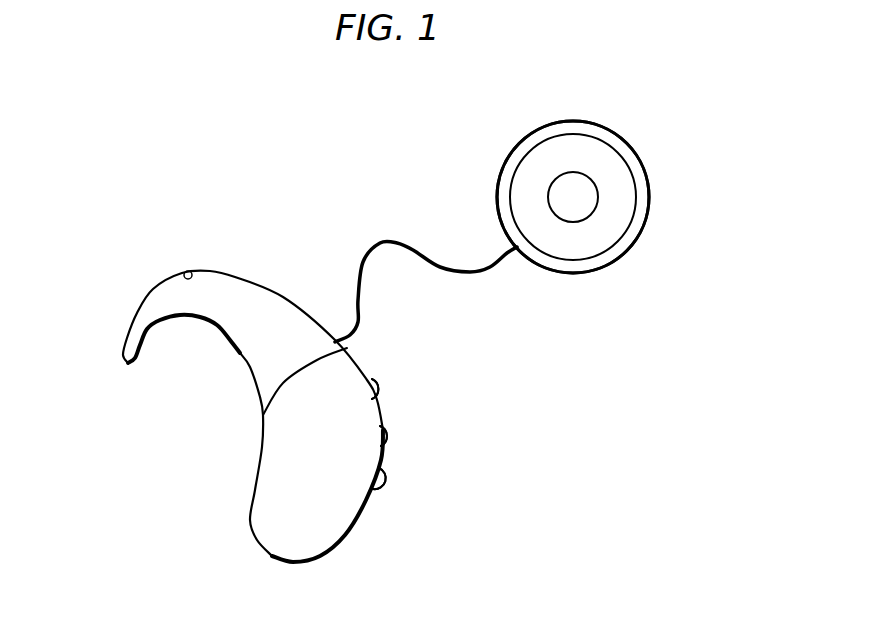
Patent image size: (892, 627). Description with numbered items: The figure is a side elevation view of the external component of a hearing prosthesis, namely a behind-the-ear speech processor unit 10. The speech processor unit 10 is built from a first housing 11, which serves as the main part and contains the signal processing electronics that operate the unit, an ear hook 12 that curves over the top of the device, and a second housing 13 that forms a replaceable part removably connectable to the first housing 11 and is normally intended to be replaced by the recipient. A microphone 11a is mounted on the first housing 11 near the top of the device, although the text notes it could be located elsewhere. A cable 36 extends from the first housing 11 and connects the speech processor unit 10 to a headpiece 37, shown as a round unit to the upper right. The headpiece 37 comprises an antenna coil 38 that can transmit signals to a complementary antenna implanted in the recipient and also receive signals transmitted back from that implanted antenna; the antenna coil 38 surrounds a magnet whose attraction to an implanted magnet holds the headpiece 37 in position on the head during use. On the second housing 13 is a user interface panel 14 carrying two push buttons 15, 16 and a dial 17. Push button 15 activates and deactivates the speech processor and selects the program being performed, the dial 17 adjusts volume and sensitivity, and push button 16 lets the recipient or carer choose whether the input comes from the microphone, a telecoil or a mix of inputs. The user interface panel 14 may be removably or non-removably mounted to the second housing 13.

The BTE speech processor unit 10 is at (263, 212).
The first housing 11 is at (288, 297).
The microphone 11a is at (186, 272).
The ear hook 12 is at (142, 348).
The second housing 13 is at (277, 490).
The user interface panel 14 is at (504, 372).
The push button 15 is at (375, 383).
The push button 16 is at (380, 487).
The dial 17 is at (383, 428).
The cable 36 is at (423, 250).
The headpiece 37 is at (627, 142).
The antenna coil 38 is at (650, 198).